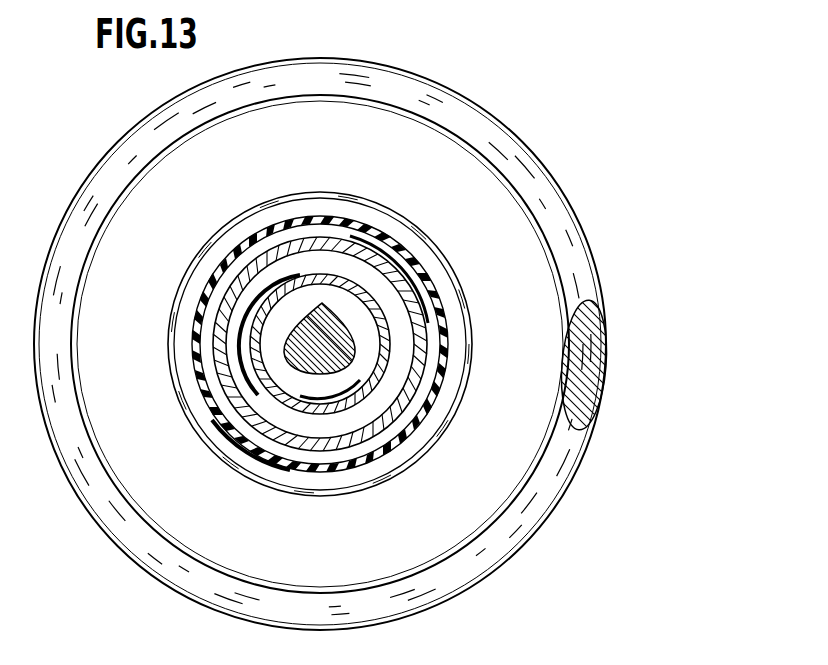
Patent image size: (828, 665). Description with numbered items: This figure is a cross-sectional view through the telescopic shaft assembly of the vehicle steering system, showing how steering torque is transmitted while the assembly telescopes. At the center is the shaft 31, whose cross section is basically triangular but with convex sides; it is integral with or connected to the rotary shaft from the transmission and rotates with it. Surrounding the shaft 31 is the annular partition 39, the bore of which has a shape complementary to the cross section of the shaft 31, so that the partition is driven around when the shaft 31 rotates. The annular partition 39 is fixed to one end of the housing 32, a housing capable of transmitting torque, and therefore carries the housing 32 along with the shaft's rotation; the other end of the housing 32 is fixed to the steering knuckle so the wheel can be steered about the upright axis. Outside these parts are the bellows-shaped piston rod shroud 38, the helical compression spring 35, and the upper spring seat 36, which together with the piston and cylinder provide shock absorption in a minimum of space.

The shaft 31 is at (328, 328).
The housing 32 is at (362, 247).
The helical compression spring 35 is at (592, 318).
The upper spring seat 36 is at (575, 272).
The bellows-shaped piston rod shroud 38 is at (400, 251).
The annular partition 39 is at (397, 318).